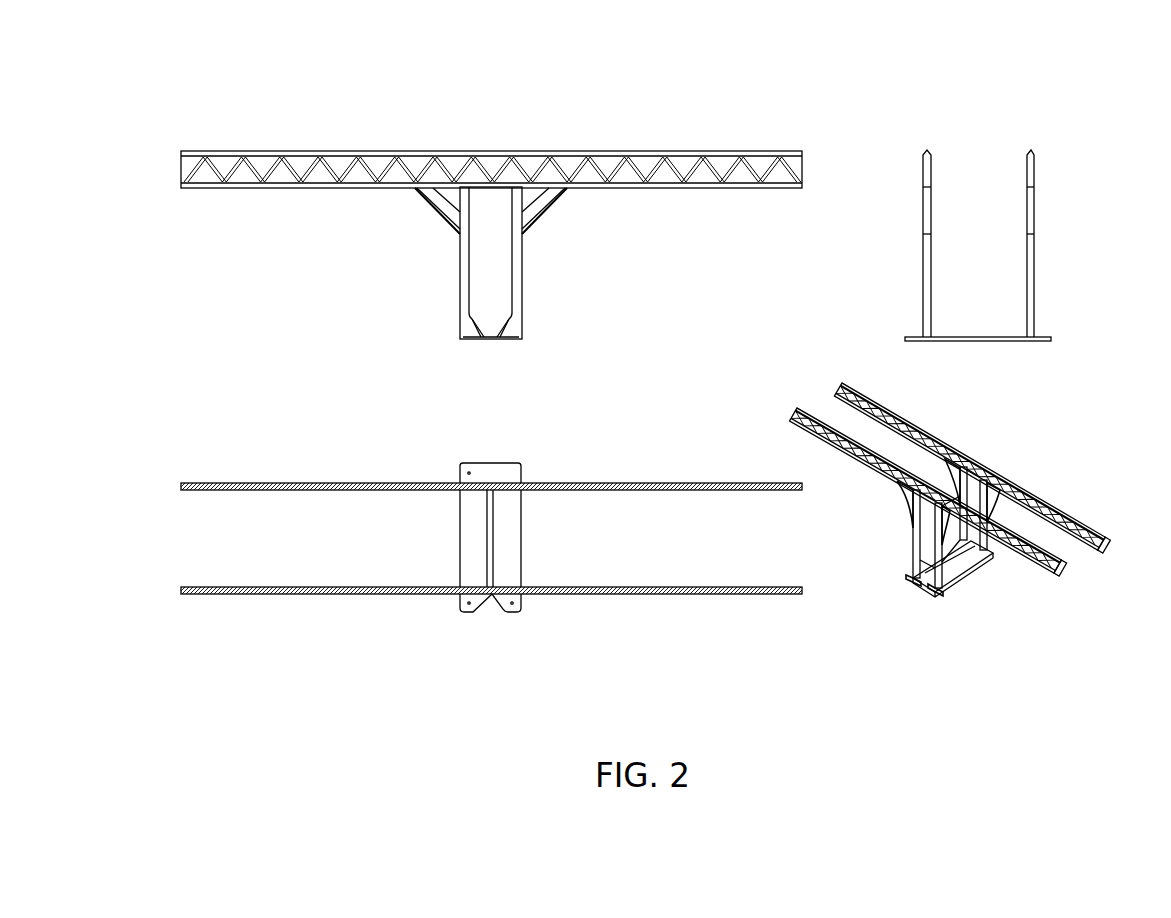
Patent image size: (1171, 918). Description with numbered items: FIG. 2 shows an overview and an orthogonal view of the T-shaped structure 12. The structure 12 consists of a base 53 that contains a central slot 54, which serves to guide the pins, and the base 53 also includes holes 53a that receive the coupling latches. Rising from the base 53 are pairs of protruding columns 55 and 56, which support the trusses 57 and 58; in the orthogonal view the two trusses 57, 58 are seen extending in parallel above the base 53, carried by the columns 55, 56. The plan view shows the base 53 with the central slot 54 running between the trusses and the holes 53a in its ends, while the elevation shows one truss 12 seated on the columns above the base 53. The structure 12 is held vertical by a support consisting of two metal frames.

The structure 12 is at (572, 140).
The holes 53a is at (510, 473).
The central slot 54 is at (493, 558).
The protruding columns 56 is at (995, 482).
The truss 58 is at (1113, 556).
The truss 57 is at (1066, 582).
The base 53 is at (955, 572).
The protruding columns 55 is at (928, 588).